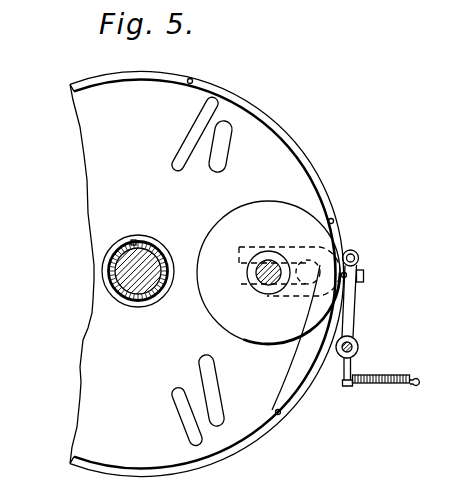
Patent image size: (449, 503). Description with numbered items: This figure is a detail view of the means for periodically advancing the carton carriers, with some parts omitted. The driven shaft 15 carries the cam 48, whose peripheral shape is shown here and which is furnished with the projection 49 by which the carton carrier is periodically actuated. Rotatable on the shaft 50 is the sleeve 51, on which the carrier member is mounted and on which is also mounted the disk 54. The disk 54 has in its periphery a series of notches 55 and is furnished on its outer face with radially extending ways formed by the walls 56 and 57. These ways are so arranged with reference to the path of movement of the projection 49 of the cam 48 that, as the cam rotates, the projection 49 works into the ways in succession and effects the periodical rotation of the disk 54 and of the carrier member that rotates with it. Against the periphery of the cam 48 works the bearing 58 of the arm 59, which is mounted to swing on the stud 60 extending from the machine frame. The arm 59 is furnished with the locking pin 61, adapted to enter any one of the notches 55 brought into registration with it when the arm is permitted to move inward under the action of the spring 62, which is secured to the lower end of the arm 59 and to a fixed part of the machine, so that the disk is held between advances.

The shaft 15 is at (255, 344).
The cam 48 is at (296, 207).
The projection 49 is at (311, 263).
The shaft 50 is at (134, 292).
The sleeve 51 is at (149, 248).
The disk 54 is at (268, 118).
The notches 55 is at (196, 73).
The wall 56 is at (195, 126).
The wall 57 is at (228, 162).
The bearing 58 is at (358, 254).
The arm 59 is at (350, 322).
The stud 60 is at (350, 350).
The locking pin 61 is at (366, 277).
The spring 62 is at (367, 386).